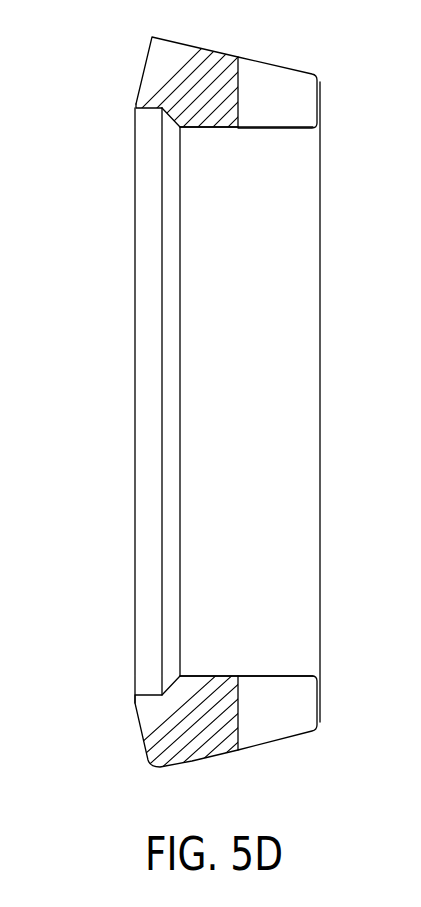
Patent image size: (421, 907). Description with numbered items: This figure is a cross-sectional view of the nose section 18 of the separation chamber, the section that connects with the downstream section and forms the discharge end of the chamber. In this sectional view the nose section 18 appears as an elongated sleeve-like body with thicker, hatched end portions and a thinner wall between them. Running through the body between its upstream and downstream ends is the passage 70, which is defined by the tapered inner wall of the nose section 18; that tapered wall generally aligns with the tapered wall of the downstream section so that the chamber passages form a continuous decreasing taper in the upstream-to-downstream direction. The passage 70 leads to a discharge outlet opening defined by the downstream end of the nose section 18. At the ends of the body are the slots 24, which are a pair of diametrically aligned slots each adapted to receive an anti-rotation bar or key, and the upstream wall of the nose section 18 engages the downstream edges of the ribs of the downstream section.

The passage 70 is at (268, 560).
The slot 24 is at (297, 108).
The nose section 18 is at (194, 765).